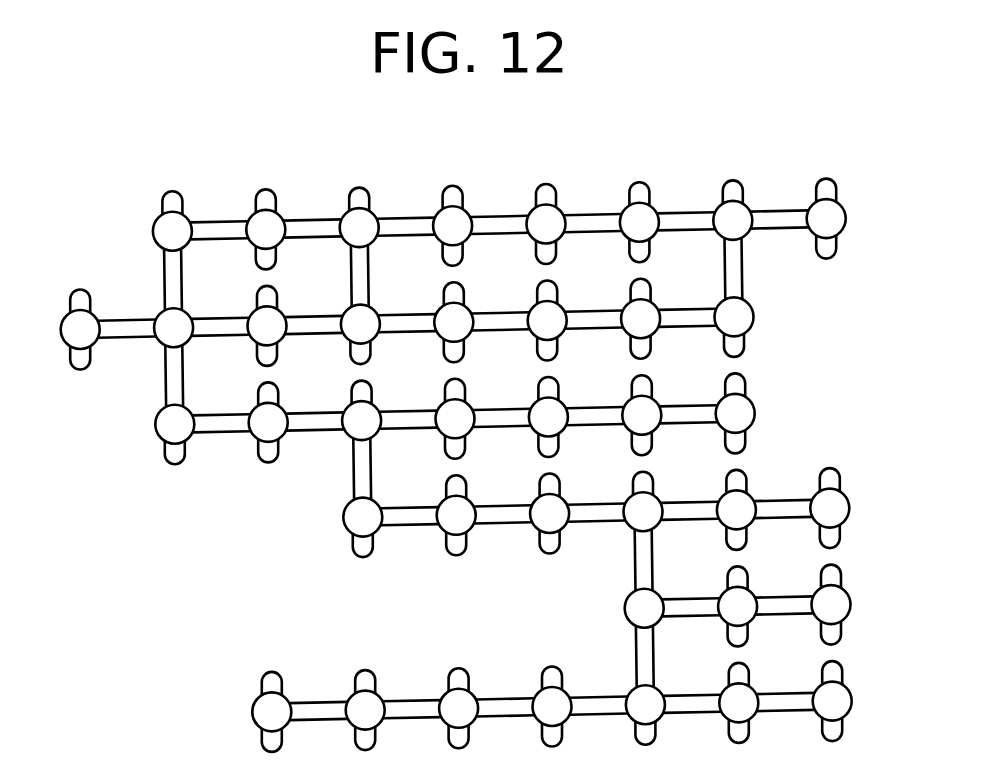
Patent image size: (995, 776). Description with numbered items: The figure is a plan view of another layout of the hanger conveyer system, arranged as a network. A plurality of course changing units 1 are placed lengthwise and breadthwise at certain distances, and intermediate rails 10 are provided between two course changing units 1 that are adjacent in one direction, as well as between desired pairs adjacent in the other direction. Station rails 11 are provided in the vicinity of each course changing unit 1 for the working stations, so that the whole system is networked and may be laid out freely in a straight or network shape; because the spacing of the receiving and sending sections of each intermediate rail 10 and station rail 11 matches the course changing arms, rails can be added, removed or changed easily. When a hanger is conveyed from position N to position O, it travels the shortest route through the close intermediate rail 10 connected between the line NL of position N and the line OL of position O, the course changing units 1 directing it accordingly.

The course changing unit 1 is at (155, 219).
The intermediate rail 10 is at (219, 240).
The station rail 11 is at (269, 192).
The position N is at (463, 256).
The position O is at (463, 290).
The line NL is at (492, 215).
The line OL is at (596, 311).